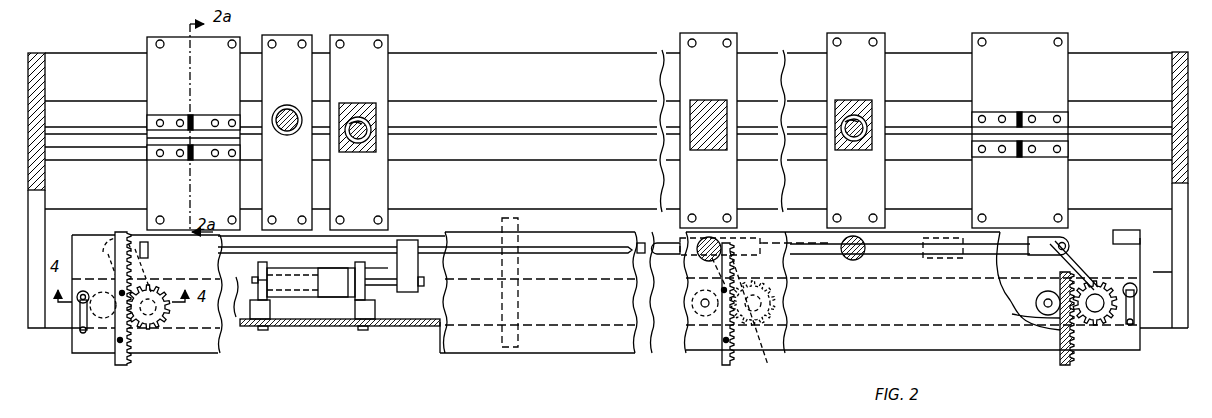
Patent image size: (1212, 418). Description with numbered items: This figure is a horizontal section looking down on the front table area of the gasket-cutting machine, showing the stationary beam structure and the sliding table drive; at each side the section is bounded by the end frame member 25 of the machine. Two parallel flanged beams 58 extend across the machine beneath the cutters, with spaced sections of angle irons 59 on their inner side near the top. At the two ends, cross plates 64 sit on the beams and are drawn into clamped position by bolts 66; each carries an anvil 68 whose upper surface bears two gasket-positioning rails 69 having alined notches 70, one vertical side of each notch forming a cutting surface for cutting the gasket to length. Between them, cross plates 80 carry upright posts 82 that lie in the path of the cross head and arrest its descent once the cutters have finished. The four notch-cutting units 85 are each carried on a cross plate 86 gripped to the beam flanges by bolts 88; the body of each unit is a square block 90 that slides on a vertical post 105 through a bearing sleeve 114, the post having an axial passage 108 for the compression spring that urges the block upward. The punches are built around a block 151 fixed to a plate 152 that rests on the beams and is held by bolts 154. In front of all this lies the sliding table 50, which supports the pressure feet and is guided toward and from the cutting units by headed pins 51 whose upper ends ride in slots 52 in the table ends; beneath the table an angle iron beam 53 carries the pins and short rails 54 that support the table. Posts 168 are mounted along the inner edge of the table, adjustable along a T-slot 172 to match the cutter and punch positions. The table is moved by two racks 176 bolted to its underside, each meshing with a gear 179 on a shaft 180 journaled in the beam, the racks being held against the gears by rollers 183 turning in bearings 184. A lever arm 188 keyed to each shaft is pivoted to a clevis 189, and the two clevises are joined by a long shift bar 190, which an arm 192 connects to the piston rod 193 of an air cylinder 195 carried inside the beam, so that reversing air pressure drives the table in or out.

The end post 25 is at (36, 53).
The sliding table 50 is at (622, 354).
The headed pins 51 is at (87, 292).
The slots 52 is at (80, 333).
The angle iron beam 53 is at (440, 326).
The short rails 54 is at (510, 223).
The flanged beams 58 is at (545, 56).
The angle iron sections 59 is at (484, 104).
The cross plates 64 is at (177, 40).
The bolts 66 is at (156, 42).
The anvil 68 is at (147, 142).
The gasket-positioning rails 69 is at (173, 120).
The alined notches 70 is at (197, 126).
The cross plates 80 is at (313, 42).
The posts 82 is at (287, 105).
The notch-cutting units 85 is at (372, 158).
The cross plate 86 is at (389, 46).
The bolts 88 is at (378, 40).
The block 90 is at (376, 105).
The vertical post 105 is at (356, 148).
The vertical passage 108 is at (372, 133).
The bearing sleeve 114 is at (352, 124).
The block 151 is at (722, 151).
The plate 152 is at (717, 34).
The bolts 154 is at (726, 47).
The posts 168 is at (740, 236).
The T-slot 172 is at (597, 240).
The racks 176 is at (125, 366).
The gear 179 is at (160, 328).
The shaft 180 is at (168, 315).
The rollers 183 is at (104, 318).
The bearings 184 is at (85, 330).
The lever arm 188 is at (150, 268).
The clevises 189 is at (130, 233).
The shift bar 190 is at (385, 248).
The arm 192 is at (418, 240).
The piston rod 193 is at (387, 287).
The cylinder 195 is at (300, 300).